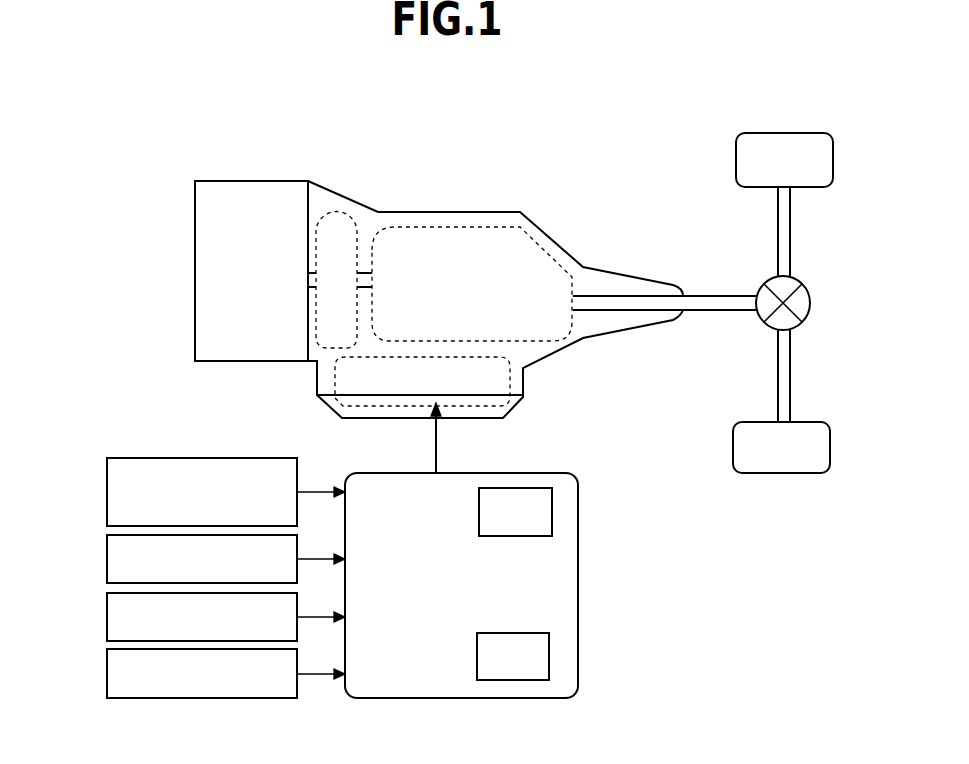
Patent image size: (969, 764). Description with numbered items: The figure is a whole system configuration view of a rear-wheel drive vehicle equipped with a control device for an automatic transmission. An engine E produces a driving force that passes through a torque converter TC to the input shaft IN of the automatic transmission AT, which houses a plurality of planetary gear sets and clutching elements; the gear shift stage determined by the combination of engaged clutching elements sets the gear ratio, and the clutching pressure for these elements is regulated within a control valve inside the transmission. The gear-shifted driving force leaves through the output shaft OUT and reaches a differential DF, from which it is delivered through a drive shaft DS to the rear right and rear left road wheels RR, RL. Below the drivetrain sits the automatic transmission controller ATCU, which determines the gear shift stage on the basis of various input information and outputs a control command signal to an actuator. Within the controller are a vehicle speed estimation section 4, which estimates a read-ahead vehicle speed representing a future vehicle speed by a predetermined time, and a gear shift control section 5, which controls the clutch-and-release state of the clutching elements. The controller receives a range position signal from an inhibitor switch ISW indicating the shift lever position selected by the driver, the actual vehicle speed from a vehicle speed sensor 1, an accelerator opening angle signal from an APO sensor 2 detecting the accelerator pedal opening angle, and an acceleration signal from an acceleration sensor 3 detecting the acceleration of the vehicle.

The engine E is at (232, 181).
The automatic transmission AT is at (482, 185).
The torque converter TC is at (339, 212).
The input shaft IN is at (363, 273).
The output shaft OUT is at (637, 295).
The differential DF is at (812, 297).
The drive shaft DS is at (790, 243).
The rear right road wheel RR is at (762, 133).
The rear left road wheel RL is at (759, 473).
The automatic transmission controller ATCU is at (530, 472).
The gear shift control section 5 is at (552, 510).
The vehicle speed estimation section 4 is at (549, 655).
The inhibitor switch ISW is at (107, 492).
The vehicle speed sensor 1 is at (107, 558).
The APO sensor 2 is at (107, 616).
The acceleration sensor 3 is at (107, 673).